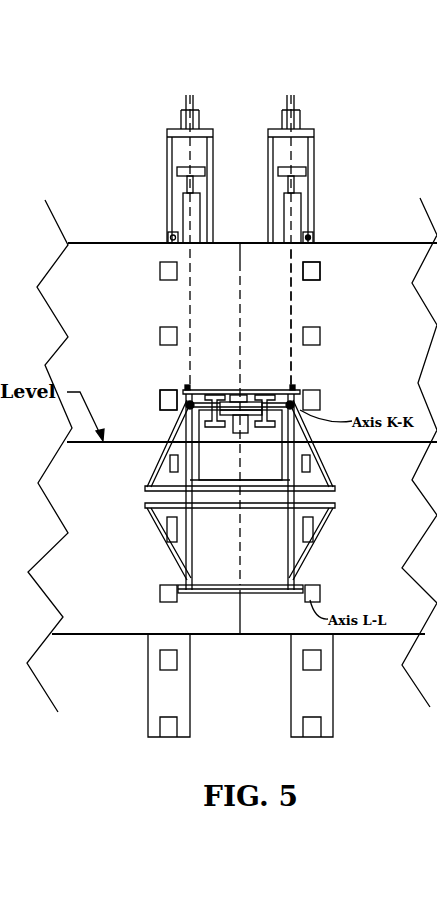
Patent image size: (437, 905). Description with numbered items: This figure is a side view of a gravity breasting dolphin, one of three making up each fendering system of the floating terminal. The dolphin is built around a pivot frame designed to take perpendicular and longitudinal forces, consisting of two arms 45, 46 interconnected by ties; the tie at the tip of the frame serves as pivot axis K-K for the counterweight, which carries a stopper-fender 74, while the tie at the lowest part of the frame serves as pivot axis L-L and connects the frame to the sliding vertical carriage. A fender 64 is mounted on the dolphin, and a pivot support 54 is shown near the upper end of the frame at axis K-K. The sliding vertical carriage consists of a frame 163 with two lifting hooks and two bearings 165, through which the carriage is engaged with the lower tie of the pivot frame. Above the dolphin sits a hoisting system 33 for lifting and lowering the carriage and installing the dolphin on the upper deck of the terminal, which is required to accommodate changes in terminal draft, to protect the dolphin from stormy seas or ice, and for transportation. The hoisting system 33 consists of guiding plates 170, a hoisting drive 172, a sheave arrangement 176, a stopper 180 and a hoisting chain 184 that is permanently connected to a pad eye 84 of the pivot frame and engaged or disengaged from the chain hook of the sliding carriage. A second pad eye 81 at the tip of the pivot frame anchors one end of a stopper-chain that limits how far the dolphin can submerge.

The hoisting system 33 is at (155, 152).
The sheave arrangement 176 is at (295, 105).
The hoisting drive 172 is at (292, 208).
The stopper 180 is at (309, 233).
The guiding plates 170 is at (310, 273).
The hoisting chain 184 is at (291, 308).
The fender 64 is at (222, 380).
The stopper-fender 74 is at (242, 405).
The pad eye 81 is at (295, 392).
The pad eye 84 is at (180, 397).
The pivot support 54 is at (178, 414).
The arm 45 is at (163, 523).
The arm 46 is at (328, 525).
The frame 163 is at (176, 578).
The bearings 165 is at (182, 600).